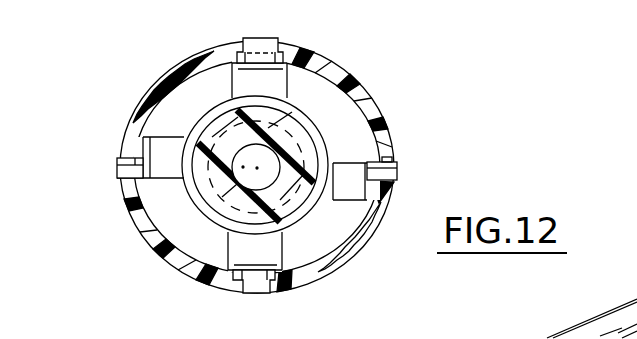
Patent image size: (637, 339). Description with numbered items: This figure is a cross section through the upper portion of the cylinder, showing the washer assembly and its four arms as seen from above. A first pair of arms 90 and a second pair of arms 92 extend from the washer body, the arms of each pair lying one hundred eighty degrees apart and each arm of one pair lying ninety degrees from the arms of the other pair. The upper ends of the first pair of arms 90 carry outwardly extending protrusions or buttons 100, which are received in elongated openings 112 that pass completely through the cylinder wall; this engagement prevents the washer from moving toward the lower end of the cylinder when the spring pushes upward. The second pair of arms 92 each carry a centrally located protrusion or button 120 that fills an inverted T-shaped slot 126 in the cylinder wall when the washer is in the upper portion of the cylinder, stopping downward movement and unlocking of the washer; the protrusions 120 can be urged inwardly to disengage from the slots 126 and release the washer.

The first pair of arms 90 is at (172, 142).
The second pair of arms 92 is at (288, 85).
The protrusion or button 100 is at (118, 169).
The elongated opening 112 is at (120, 180).
The protrusion or button 120 is at (273, 45).
The inverted T-shaped slot 126 is at (252, 40).